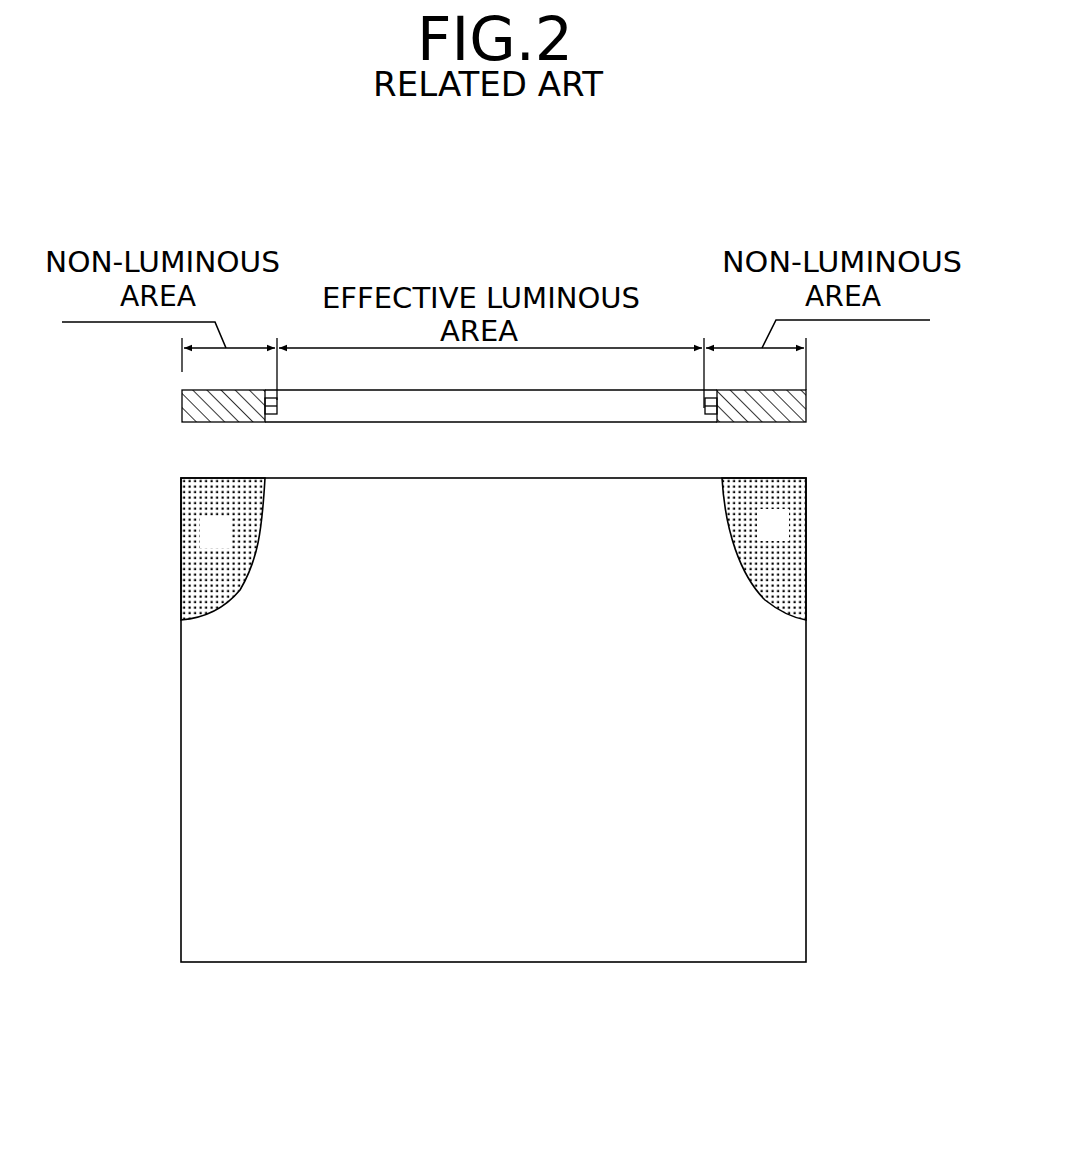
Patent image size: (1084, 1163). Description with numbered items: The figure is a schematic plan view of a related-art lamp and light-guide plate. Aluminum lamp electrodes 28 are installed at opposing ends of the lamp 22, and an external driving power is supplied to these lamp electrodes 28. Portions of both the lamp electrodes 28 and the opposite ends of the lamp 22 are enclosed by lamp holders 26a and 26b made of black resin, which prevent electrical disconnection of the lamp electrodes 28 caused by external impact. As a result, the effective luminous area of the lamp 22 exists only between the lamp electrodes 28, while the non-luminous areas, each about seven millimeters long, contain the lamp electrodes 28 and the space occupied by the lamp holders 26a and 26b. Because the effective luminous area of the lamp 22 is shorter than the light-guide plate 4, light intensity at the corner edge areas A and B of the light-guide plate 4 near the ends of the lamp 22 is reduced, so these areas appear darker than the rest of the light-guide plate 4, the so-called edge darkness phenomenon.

The light-guide plate 4 is at (806, 840).
The lamp 22 is at (683, 415).
The lamp holder 26a is at (182, 407).
The lamp holder 26b is at (806, 403).
The lamp electrodes 28 is at (277, 418).